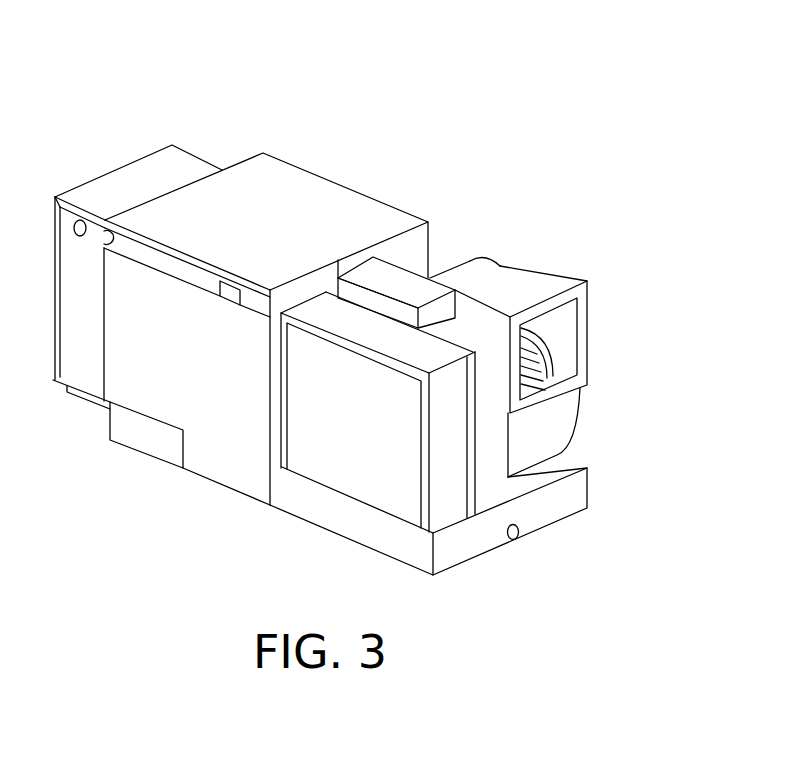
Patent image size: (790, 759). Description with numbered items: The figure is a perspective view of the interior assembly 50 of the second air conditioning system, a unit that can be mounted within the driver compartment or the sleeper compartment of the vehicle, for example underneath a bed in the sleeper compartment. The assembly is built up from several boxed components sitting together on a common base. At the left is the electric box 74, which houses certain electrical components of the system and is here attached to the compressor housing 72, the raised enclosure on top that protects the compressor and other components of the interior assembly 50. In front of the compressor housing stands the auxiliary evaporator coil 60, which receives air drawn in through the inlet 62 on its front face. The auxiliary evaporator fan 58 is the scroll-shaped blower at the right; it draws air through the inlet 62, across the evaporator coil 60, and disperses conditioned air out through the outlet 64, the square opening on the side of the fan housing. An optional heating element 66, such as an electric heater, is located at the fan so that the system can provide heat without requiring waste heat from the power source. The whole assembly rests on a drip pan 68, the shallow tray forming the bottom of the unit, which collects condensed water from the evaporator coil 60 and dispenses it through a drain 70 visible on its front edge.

The interior assembly 50 is at (446, 215).
The auxiliary evaporator fan 58 is at (540, 275).
The auxiliary evaporator coil 60 is at (447, 517).
The inlet 62 is at (370, 430).
The outlet 64 is at (570, 341).
The heating element 66 is at (492, 450).
The drip pan 68 is at (588, 490).
The drain 70 is at (518, 538).
The compressor housing 72 is at (315, 183).
The electric box 74 is at (161, 265).